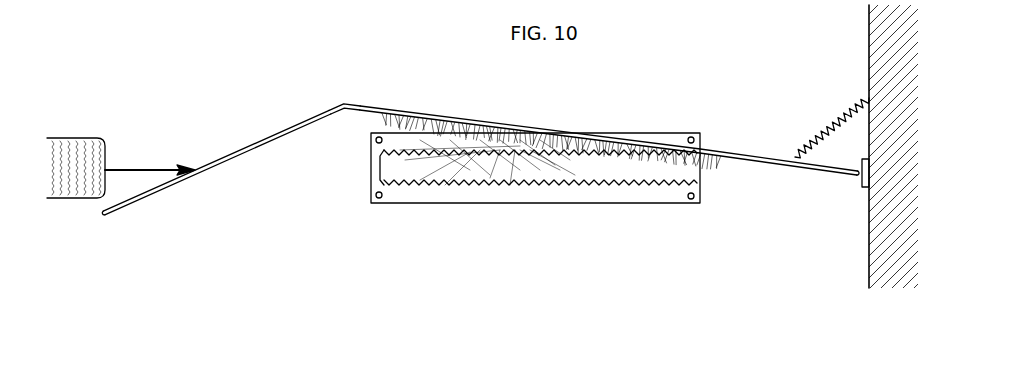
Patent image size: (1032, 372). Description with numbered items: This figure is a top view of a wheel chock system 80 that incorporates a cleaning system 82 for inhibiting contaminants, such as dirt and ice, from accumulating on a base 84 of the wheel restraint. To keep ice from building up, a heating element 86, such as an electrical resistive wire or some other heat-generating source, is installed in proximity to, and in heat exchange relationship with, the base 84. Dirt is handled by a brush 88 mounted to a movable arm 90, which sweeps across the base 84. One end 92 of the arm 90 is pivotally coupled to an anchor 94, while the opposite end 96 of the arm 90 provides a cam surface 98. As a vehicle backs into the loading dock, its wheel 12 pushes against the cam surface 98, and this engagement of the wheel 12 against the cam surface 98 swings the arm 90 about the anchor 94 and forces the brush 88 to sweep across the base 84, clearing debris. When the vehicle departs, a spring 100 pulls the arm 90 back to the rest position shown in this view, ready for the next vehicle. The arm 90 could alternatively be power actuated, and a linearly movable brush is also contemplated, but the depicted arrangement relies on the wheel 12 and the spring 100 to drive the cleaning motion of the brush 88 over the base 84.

The wheel chock system 80 is at (190, 61).
The wheel 12 is at (107, 157).
The cam surface 98 is at (224, 157).
The opposite end 96 is at (168, 192).
The movable arm 90 is at (356, 102).
The one end 92 is at (834, 176).
The brush 88 is at (370, 117).
The cleaning system 82 is at (620, 98).
The base 84 is at (602, 170).
The heating element 86 is at (528, 186).
The spring 100 is at (823, 130).
The anchor 94 is at (863, 182).